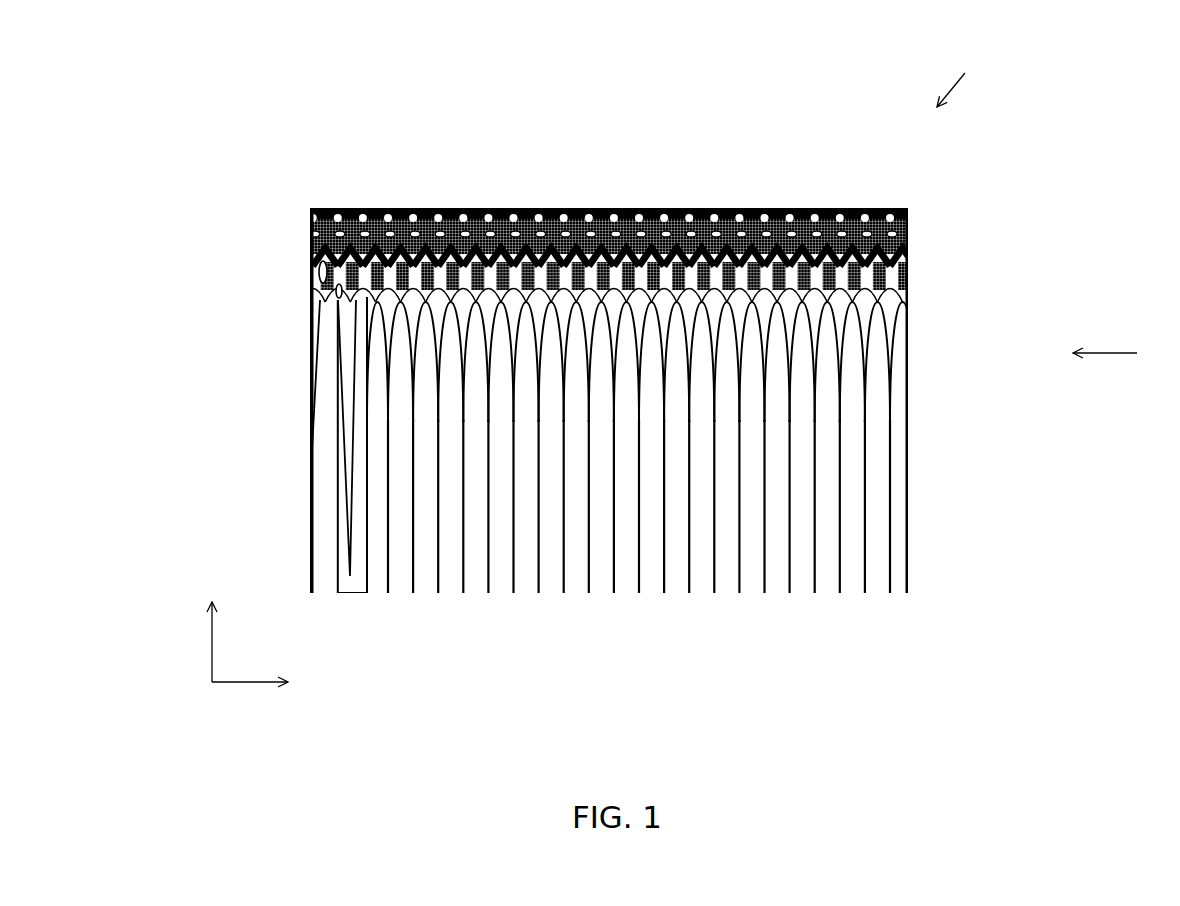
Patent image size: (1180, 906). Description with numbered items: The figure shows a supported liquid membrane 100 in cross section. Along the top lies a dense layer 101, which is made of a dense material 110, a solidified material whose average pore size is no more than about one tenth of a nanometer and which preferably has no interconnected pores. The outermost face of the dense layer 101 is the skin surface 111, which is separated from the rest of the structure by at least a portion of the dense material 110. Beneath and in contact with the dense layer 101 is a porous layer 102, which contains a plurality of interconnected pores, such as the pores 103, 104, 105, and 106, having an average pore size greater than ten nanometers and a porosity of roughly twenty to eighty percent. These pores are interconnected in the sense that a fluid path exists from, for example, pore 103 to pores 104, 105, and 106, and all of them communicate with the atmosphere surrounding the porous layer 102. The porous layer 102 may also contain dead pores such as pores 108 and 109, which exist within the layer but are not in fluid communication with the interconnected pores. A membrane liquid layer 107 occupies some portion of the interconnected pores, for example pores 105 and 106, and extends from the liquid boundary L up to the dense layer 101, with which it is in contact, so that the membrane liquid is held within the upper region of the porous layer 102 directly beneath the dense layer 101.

The supported liquid membrane 100 is at (270, 118).
The dense layer 101 is at (971, 77).
The porous layer 102 is at (1126, 355).
The pore 103 is at (875, 332).
The pore 104 is at (907, 293).
The pore 105 is at (309, 224).
The pore 106 is at (365, 241).
The membrane liquid layer 107 is at (905, 234).
The dead pore 108 is at (338, 300).
The dead pore 109 is at (348, 403).
The dense material 110 is at (900, 208).
The skin surface 111 is at (790, 208).
The liquid boundary L is at (910, 258).